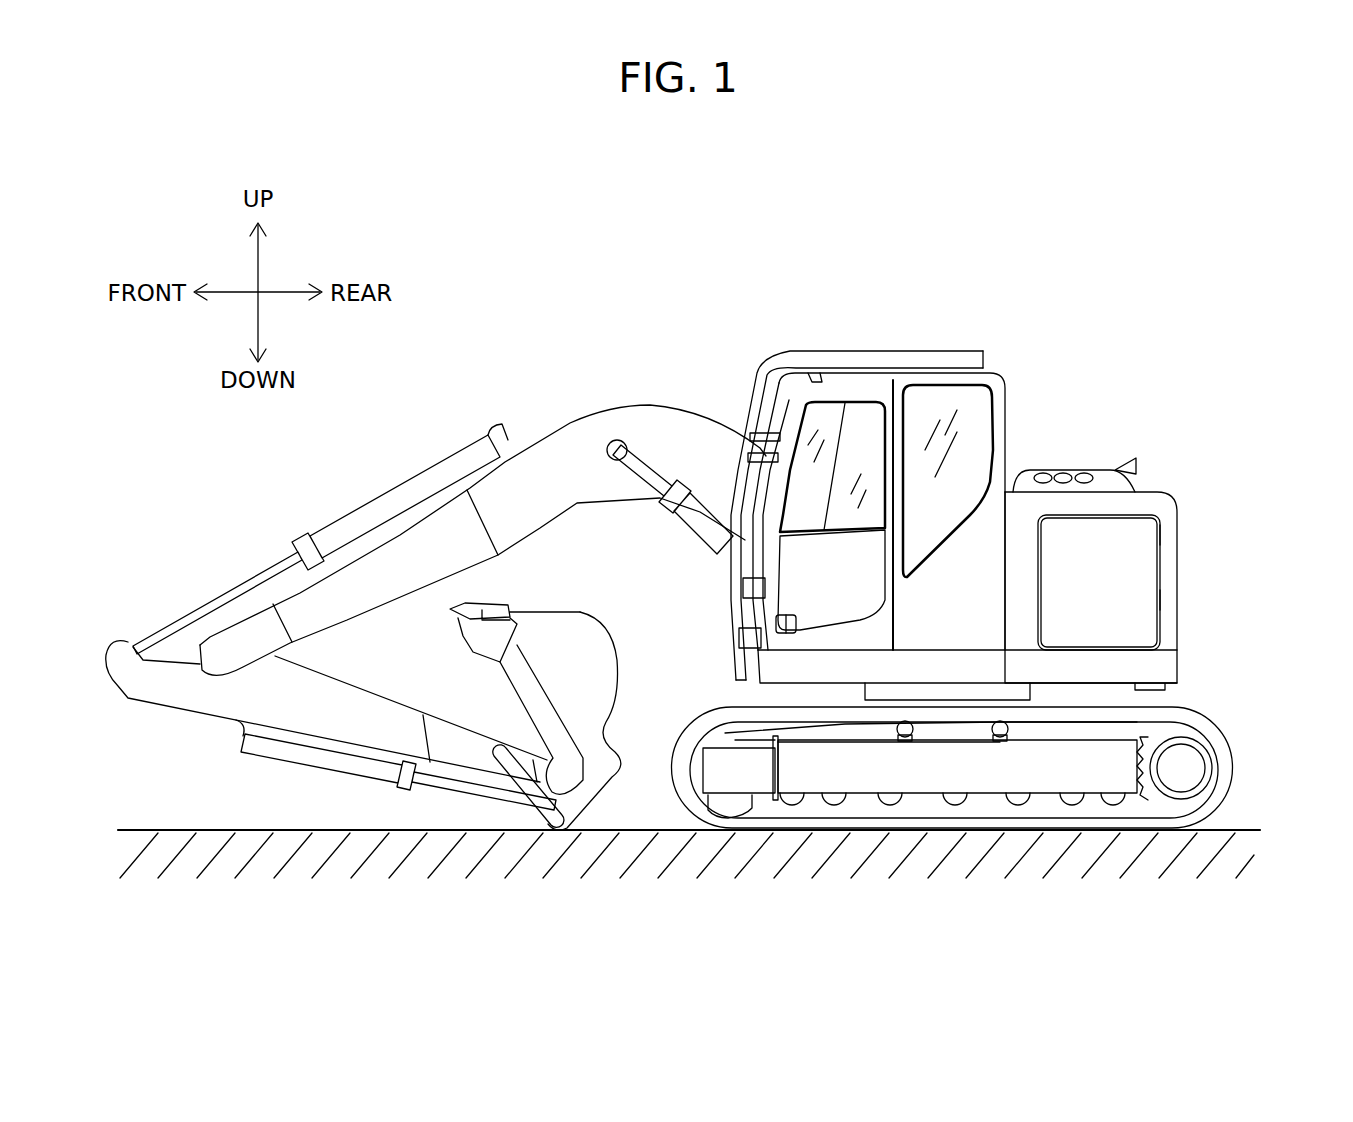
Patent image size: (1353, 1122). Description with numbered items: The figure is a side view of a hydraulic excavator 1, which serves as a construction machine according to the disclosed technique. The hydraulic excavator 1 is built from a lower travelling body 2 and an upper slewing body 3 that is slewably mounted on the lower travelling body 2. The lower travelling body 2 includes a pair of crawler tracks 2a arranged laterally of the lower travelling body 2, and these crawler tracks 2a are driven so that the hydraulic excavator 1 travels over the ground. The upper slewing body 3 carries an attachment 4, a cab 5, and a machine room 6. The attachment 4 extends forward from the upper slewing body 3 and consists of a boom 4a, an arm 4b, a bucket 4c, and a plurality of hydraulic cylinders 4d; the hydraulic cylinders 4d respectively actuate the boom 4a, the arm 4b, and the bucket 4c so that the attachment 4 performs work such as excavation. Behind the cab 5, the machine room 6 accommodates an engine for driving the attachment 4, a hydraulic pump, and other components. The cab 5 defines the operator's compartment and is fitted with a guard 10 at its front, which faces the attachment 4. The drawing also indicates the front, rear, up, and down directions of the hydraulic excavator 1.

The hydraulic excavator 1 is at (753, 314).
The lower travelling body 2 is at (778, 840).
The crawler track 2a is at (1222, 773).
The upper slewing body 3 is at (986, 347).
The attachment 4 is at (612, 398).
The boom 4a is at (700, 440).
The arm 4b is at (176, 700).
The bucket 4c is at (577, 620).
The hydraulic cylinder 4d is at (373, 500).
The cab 5 is at (916, 385).
The machine room 6 is at (1128, 556).
The guard 10 is at (822, 375).